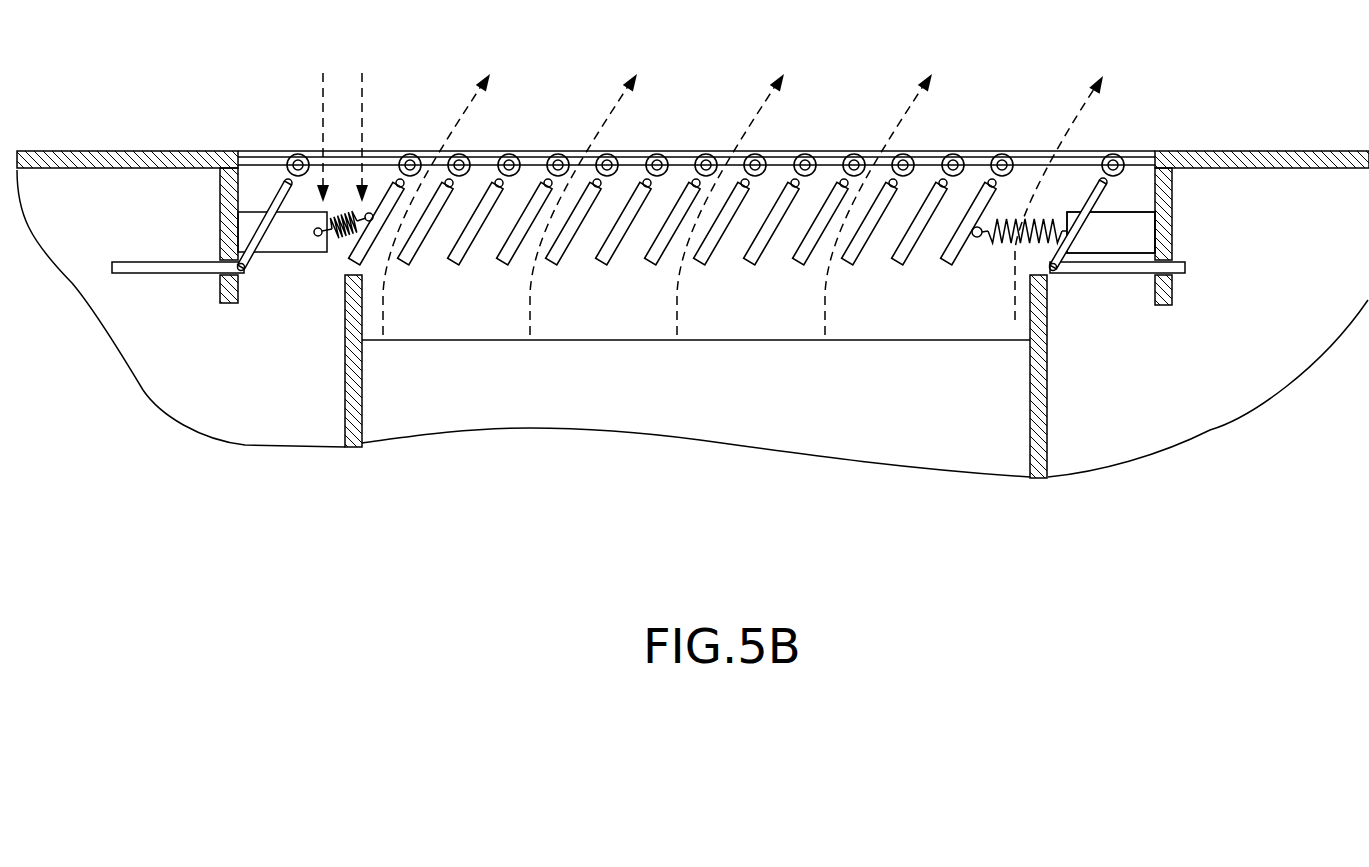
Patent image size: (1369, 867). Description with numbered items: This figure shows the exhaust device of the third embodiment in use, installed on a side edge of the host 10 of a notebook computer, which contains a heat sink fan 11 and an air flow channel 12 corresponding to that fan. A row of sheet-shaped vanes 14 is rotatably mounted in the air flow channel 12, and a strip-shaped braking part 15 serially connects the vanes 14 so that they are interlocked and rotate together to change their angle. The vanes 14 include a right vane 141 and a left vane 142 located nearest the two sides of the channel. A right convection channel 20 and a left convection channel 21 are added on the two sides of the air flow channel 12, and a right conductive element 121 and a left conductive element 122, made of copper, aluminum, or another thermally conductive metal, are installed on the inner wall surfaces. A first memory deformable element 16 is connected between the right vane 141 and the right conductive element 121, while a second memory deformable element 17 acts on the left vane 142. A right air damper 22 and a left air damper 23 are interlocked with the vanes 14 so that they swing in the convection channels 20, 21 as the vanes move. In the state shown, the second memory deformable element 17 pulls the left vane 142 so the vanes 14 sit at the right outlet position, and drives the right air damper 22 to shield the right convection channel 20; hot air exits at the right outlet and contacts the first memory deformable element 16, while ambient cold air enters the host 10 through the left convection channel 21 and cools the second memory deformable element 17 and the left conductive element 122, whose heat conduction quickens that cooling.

The host 10 is at (1297, 152).
The heat sink fan 11 is at (490, 400).
The air flow channel 12 is at (696, 147).
The vane 14 is at (533, 188).
The right vane 141 is at (993, 203).
The left vane 142 is at (372, 214).
The braking part 15 is at (933, 160).
The first memory deformable element 16 is at (1053, 215).
The second memory deformable element 17 is at (343, 242).
The right convection channel 20 is at (1133, 187).
The left convection channel 21 is at (263, 188).
The right air damper 22 is at (1123, 275).
The left air damper 23 is at (160, 270).
The right conductive element 121 is at (1130, 233).
The left conductive element 122 is at (288, 242).